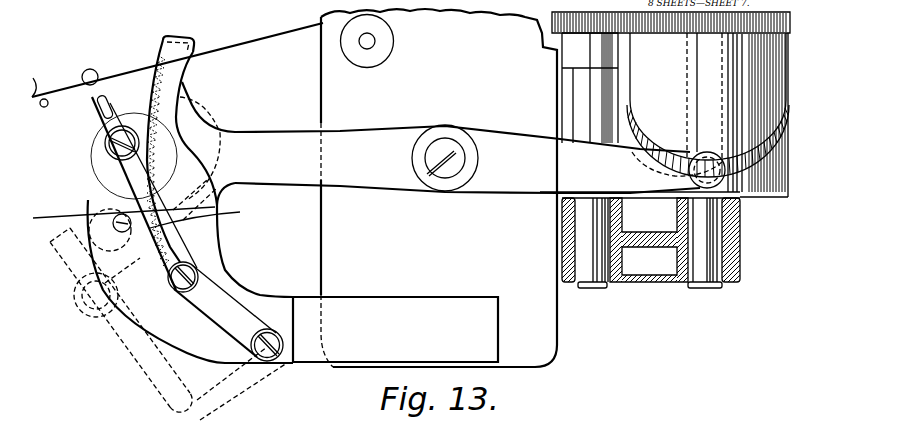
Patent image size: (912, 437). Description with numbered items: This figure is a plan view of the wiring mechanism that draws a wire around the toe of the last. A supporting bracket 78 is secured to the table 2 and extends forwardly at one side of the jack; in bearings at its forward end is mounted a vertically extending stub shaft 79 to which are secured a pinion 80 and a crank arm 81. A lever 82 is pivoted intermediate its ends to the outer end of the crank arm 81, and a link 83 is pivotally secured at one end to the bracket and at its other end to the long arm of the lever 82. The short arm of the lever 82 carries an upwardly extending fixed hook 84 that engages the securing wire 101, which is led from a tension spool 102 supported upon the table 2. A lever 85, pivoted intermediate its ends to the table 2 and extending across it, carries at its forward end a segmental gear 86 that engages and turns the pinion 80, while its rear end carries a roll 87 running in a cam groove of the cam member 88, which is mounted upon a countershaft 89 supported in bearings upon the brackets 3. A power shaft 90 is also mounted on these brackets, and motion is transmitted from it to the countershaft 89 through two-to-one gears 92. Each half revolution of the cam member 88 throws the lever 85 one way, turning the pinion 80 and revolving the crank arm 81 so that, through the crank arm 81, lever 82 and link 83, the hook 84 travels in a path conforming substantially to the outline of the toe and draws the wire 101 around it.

The table 2 is at (553, 345).
The brackets 3 is at (650, 278).
The supporting bracket 78 is at (130, 327).
The stub shaft 79 is at (108, 220).
The pinion 80 is at (107, 188).
The crank arm 81 is at (105, 170).
The lever 82 is at (174, 294).
The link 83 is at (230, 300).
The hook 84 is at (88, 70).
The lever 85 is at (388, 185).
The segmental gear 86 is at (163, 40).
The roll 87 is at (729, 190).
The cam member 88 is at (775, 172).
The countershaft 89 is at (707, 284).
The power shaft 90 is at (598, 286).
The two-to-one gears 92 is at (552, 15).
The securing wire 101 is at (251, 45).
The tension spool 102 is at (392, 44).